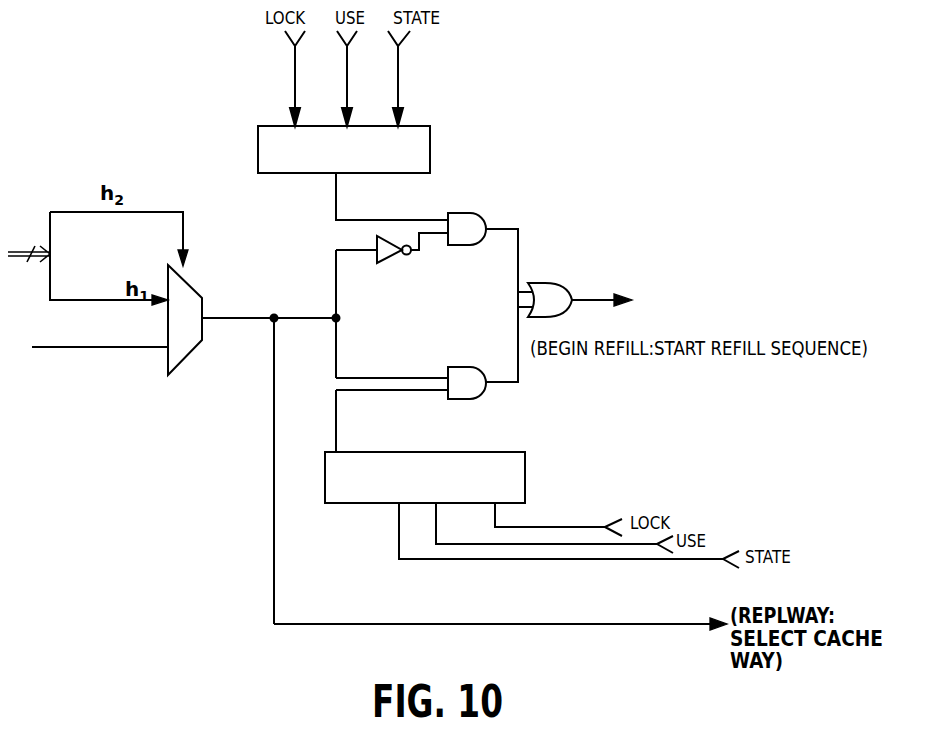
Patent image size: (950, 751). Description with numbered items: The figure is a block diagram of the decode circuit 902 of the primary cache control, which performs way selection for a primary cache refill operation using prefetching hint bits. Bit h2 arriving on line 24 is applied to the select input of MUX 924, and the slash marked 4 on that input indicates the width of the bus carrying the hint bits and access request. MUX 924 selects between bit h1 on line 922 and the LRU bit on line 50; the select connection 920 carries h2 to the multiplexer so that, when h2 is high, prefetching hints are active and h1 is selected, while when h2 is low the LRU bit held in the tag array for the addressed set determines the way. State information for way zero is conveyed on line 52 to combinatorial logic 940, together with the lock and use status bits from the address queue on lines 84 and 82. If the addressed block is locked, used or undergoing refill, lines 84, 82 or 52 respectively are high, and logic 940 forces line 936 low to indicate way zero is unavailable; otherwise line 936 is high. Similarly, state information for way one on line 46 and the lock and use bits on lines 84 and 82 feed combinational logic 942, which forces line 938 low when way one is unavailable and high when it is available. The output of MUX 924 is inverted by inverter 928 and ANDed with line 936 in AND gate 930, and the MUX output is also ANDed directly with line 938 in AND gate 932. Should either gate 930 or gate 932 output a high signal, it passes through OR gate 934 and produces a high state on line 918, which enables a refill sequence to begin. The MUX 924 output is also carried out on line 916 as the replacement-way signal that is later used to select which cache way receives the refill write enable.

The decode circuit 902 is at (138, 128).
The multiplexer select input (h2) 920 is at (186, 256).
The line 922 is at (93, 300).
The MUX 924 is at (192, 351).
The line 50 is at (105, 350).
The line 24 is at (12, 251).
The bus width 4 is at (29, 266).
The line 84 is at (297, 60).
The line 82 is at (349, 106).
The line 52 is at (400, 65).
The line 46 is at (453, 560).
The combinatorial logic 940 is at (432, 151).
The line 936 is at (402, 219).
The inverter 928 is at (385, 263).
The AND gate 930 is at (462, 246).
The AND gate 932 is at (476, 398).
The line 938 is at (368, 392).
The OR gate 934 is at (546, 284).
The line 918 is at (598, 298).
The combinational logic 942 is at (527, 474).
The line 916 is at (618, 628).